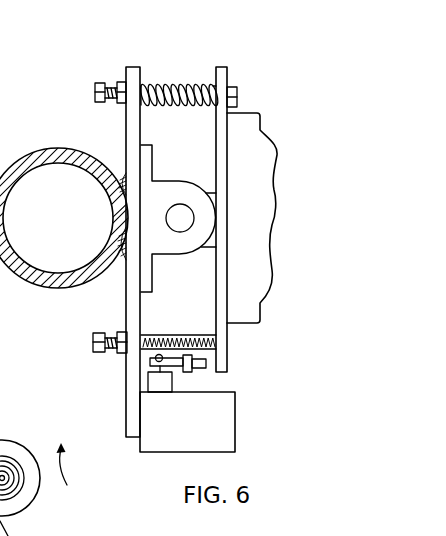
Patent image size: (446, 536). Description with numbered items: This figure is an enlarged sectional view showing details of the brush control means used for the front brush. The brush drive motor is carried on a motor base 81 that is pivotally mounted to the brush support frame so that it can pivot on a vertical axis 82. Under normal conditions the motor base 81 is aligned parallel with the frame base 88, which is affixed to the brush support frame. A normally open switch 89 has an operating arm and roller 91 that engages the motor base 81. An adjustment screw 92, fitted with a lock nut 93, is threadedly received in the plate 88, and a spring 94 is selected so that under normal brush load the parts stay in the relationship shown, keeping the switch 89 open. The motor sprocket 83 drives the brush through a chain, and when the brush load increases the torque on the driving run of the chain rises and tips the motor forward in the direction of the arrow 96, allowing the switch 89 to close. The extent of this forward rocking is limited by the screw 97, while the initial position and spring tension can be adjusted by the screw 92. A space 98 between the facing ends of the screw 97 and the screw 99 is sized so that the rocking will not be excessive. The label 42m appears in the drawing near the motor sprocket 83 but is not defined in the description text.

The frame base 88 is at (128, 66).
The motor base 81 is at (224, 68).
The spring 94 is at (148, 95).
The space 98 is at (185, 84).
The screw 97 is at (105, 103).
The screw 99 is at (238, 95).
The vertical axis 82 is at (181, 212).
The lock nut 93 is at (120, 332).
The adjustment screw 92 is at (112, 353).
The operating arm and roller 91 is at (207, 370).
The normally open switch 89 is at (235, 420).
The motor sprocket 83 is at (0, 408).
The roller 42m is at (18, 440).
The arrow 96 is at (76, 464).